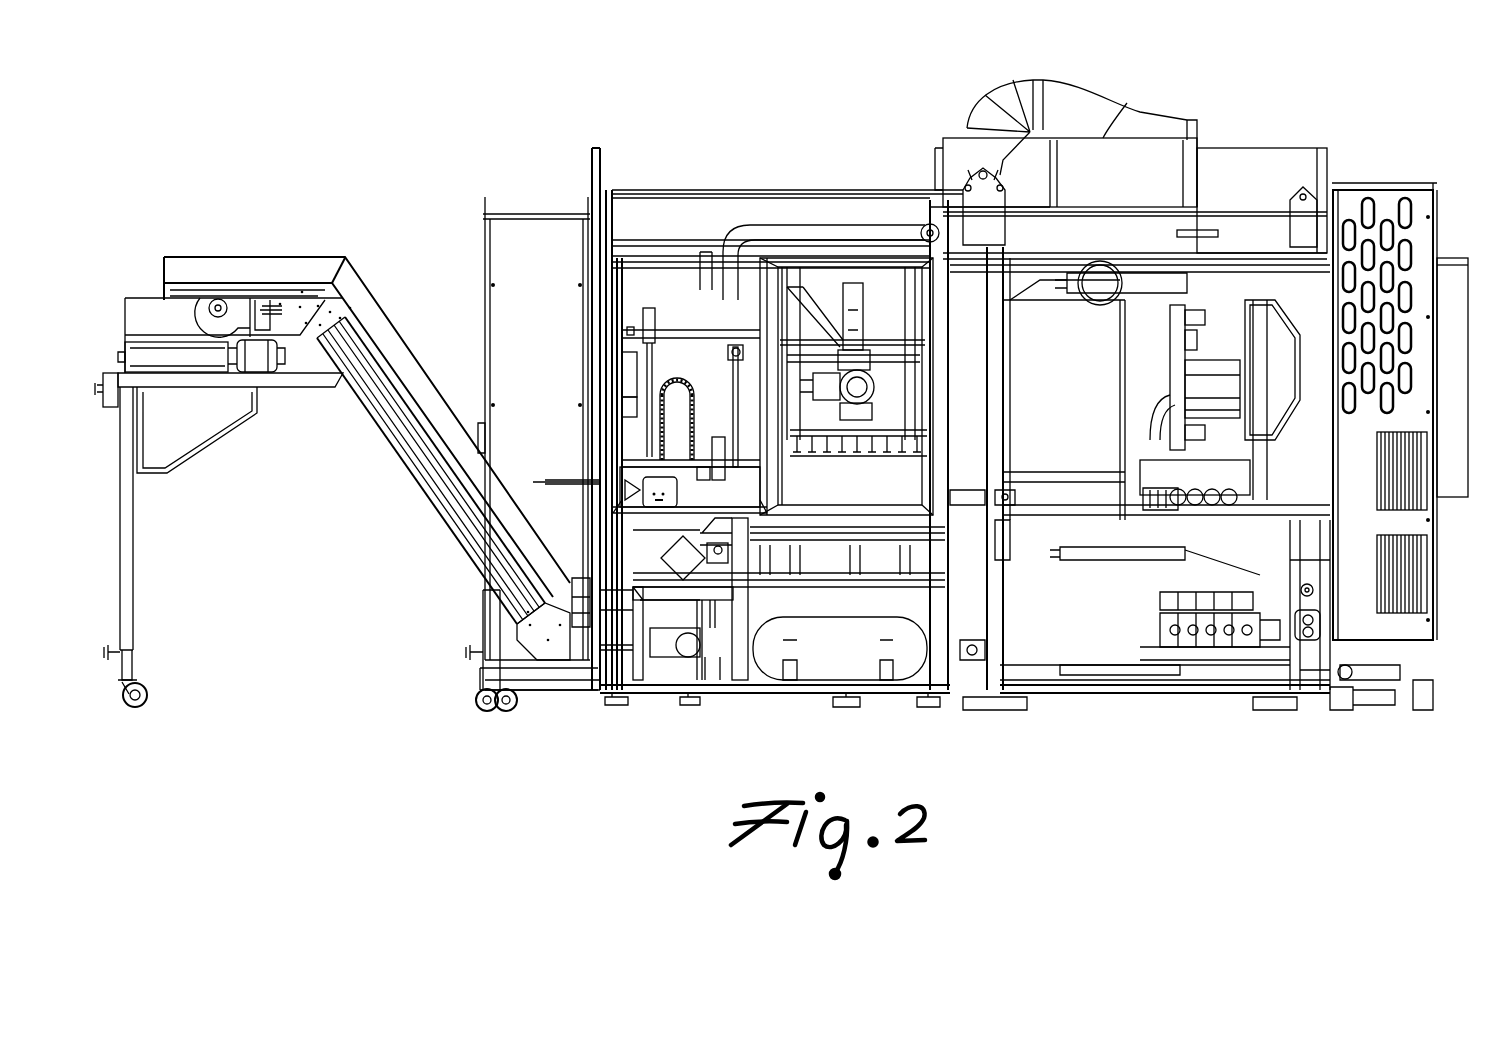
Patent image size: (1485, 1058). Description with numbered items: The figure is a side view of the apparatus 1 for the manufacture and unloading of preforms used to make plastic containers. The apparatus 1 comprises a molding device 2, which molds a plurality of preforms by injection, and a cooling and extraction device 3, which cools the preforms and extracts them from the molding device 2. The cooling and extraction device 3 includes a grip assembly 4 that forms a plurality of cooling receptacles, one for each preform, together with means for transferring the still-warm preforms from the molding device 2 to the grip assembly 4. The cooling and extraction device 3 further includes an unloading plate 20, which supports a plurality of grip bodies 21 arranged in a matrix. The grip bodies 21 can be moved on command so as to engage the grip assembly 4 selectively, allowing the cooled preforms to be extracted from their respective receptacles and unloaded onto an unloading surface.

The apparatus for the manufacture and unloading of preforms 1 is at (1333, 110).
The molding device 2 is at (1343, 378).
The cooling and extraction device 3 is at (1167, 365).
The grip assembly 4 is at (1190, 345).
The unloading plate 20 is at (873, 427).
The grip bodies 21 is at (867, 443).